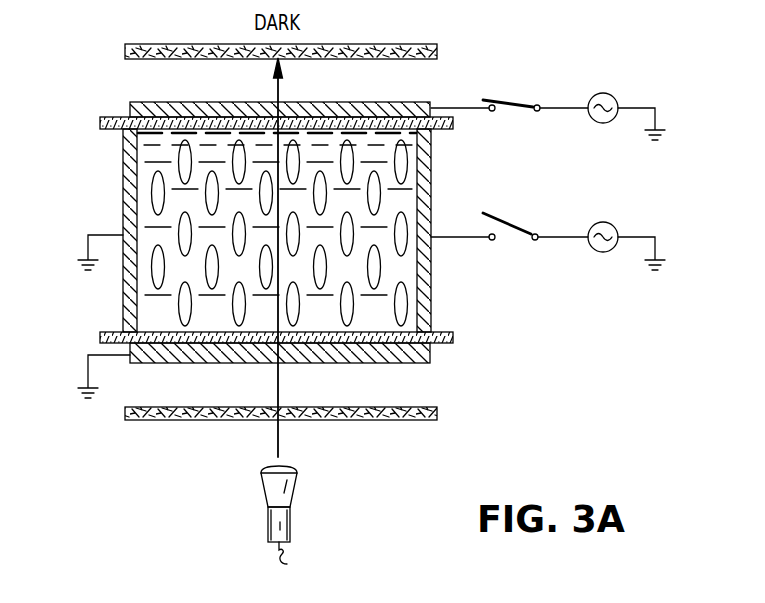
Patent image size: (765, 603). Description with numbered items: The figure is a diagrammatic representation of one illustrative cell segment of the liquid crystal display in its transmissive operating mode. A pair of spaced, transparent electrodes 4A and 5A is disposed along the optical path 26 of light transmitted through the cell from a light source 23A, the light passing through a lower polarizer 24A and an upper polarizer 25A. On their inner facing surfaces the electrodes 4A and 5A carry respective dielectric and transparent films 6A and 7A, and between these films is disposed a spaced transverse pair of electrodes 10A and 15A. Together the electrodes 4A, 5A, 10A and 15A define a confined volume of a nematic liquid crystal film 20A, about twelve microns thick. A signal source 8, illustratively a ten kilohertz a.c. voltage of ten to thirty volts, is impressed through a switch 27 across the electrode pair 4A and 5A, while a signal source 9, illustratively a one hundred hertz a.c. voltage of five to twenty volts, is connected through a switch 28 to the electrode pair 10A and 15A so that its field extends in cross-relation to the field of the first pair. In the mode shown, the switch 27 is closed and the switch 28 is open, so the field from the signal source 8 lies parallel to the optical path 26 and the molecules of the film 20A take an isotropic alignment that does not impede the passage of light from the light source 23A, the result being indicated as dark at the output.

The upper polarizer (analyzer) 25A is at (386, 44).
The lower polarizer 24A is at (382, 420).
The transparent electrode 5A is at (148, 101).
The transparent electrode 4A is at (430, 358).
The dielectric transparent film 7A is at (100, 122).
The dielectric transparent film 6A is at (455, 340).
The transverse electrode 15A is at (128, 178).
The transverse electrode 10A is at (431, 176).
The nematic liquid crystal film 20A is at (145, 287).
The optical path 26 is at (277, 384).
The light source 23A is at (270, 495).
The switch 27 is at (503, 100).
The switch 28 is at (518, 226).
The signal source 8 is at (607, 94).
The signal source 9 is at (607, 223).